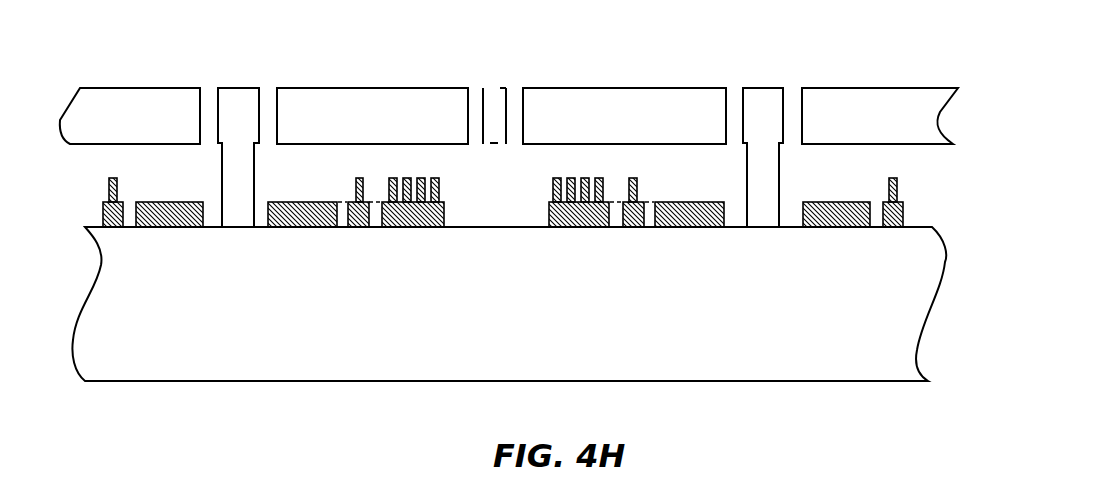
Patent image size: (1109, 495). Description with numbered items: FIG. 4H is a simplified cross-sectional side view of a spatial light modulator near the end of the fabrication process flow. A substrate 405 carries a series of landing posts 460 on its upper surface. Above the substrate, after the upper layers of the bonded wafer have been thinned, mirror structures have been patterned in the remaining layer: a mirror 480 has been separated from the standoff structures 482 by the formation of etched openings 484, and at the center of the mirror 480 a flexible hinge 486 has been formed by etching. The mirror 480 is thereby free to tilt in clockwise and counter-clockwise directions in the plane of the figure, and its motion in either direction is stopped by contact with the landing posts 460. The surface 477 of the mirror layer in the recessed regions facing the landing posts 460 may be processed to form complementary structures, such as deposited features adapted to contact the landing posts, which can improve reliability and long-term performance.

The substrate 405 is at (884, 361).
The landing posts 460 is at (357, 190).
The surface 477 is at (343, 145).
The mirror 480 is at (333, 137).
The standoff structures 482 is at (236, 88).
The etched openings 484 is at (268, 115).
The flexible hinge 486 is at (493, 99).